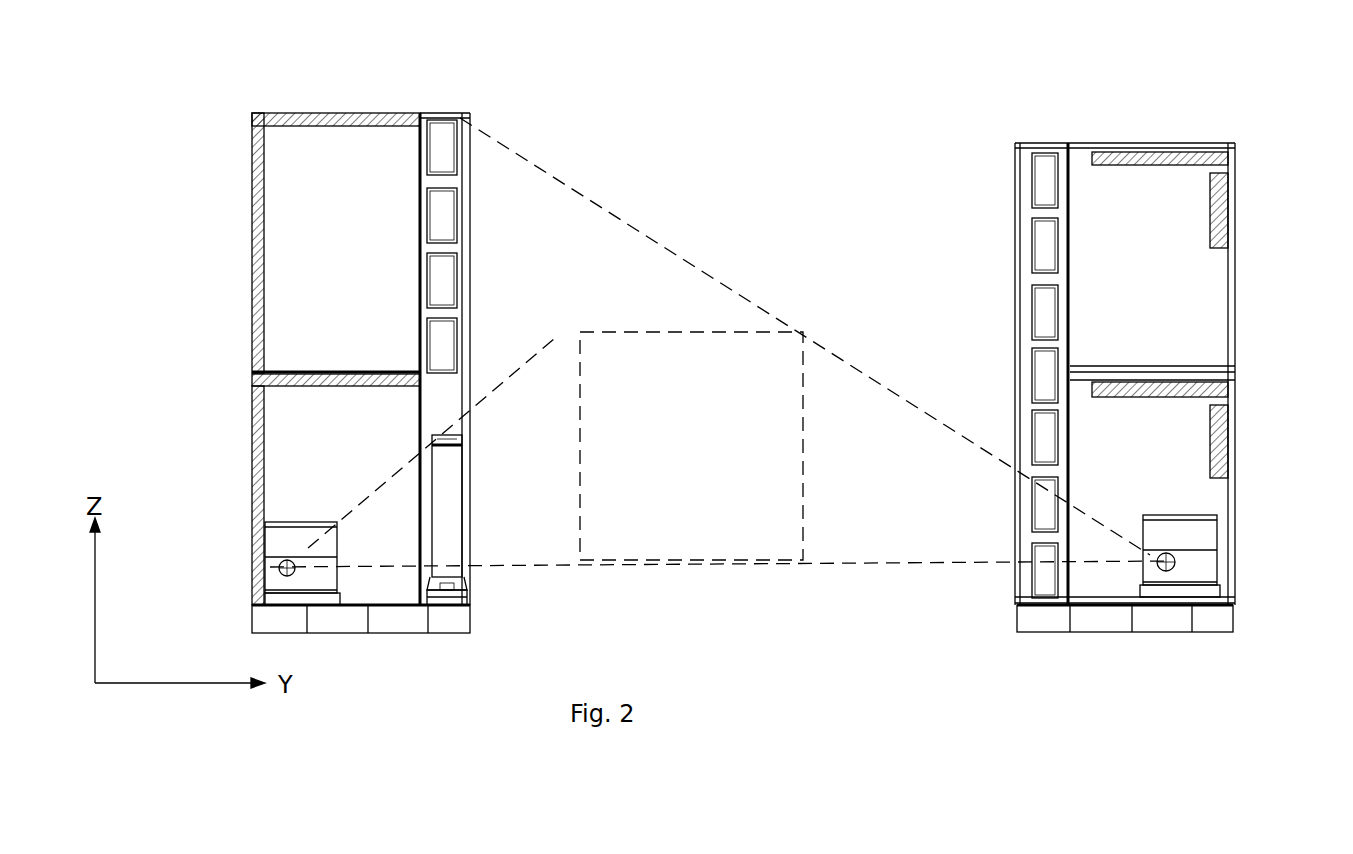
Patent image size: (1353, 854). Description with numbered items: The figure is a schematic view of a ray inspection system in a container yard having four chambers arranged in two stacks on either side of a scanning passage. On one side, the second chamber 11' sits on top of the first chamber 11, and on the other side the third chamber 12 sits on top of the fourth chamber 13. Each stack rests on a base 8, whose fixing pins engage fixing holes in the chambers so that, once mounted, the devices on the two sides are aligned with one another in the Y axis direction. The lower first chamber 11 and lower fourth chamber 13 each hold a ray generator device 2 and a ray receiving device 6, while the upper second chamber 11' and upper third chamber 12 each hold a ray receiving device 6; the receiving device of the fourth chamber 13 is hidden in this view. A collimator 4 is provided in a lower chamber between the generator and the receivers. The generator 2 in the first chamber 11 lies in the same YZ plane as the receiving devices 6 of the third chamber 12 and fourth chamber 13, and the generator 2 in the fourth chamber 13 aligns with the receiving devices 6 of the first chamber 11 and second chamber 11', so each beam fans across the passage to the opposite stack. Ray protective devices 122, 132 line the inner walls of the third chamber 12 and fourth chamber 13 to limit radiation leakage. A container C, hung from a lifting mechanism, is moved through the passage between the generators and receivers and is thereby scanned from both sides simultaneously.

The ray generator device 2 is at (287, 568).
The collimator 4 is at (465, 600).
The ray receiving device 6 is at (444, 160).
The base 8 is at (272, 620).
The first chamber 11 is at (1211, 488).
The second chamber 11' is at (1208, 257).
The third chamber 12 is at (237, 201).
The fourth chamber 13 is at (233, 460).
The ray protective device 122 is at (290, 110).
The ray protective device 132 is at (255, 503).
The container C is at (663, 380).